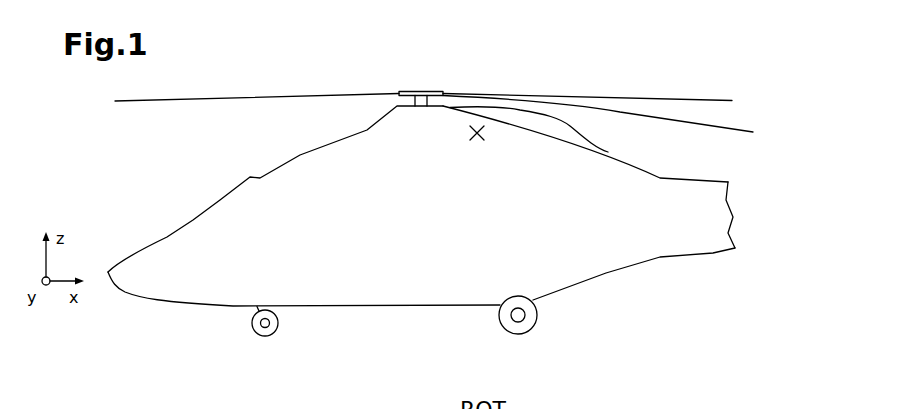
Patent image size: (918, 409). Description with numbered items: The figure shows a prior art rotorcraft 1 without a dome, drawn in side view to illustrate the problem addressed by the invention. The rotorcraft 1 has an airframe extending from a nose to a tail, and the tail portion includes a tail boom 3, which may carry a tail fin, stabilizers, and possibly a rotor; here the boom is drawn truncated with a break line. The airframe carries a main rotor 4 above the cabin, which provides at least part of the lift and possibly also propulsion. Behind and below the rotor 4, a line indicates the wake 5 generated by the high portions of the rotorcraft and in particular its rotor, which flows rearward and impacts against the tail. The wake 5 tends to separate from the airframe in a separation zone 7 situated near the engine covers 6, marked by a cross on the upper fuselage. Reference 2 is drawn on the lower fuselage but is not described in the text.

The rotorcraft 1 is at (430, 207).
The fuselage 2 is at (450, 307).
The tail boom 3 is at (715, 254).
The main rotor 4 is at (313, 89).
The wake 5 is at (640, 150).
The engine covers 6 is at (478, 142).
The separation zone 7 is at (518, 118).